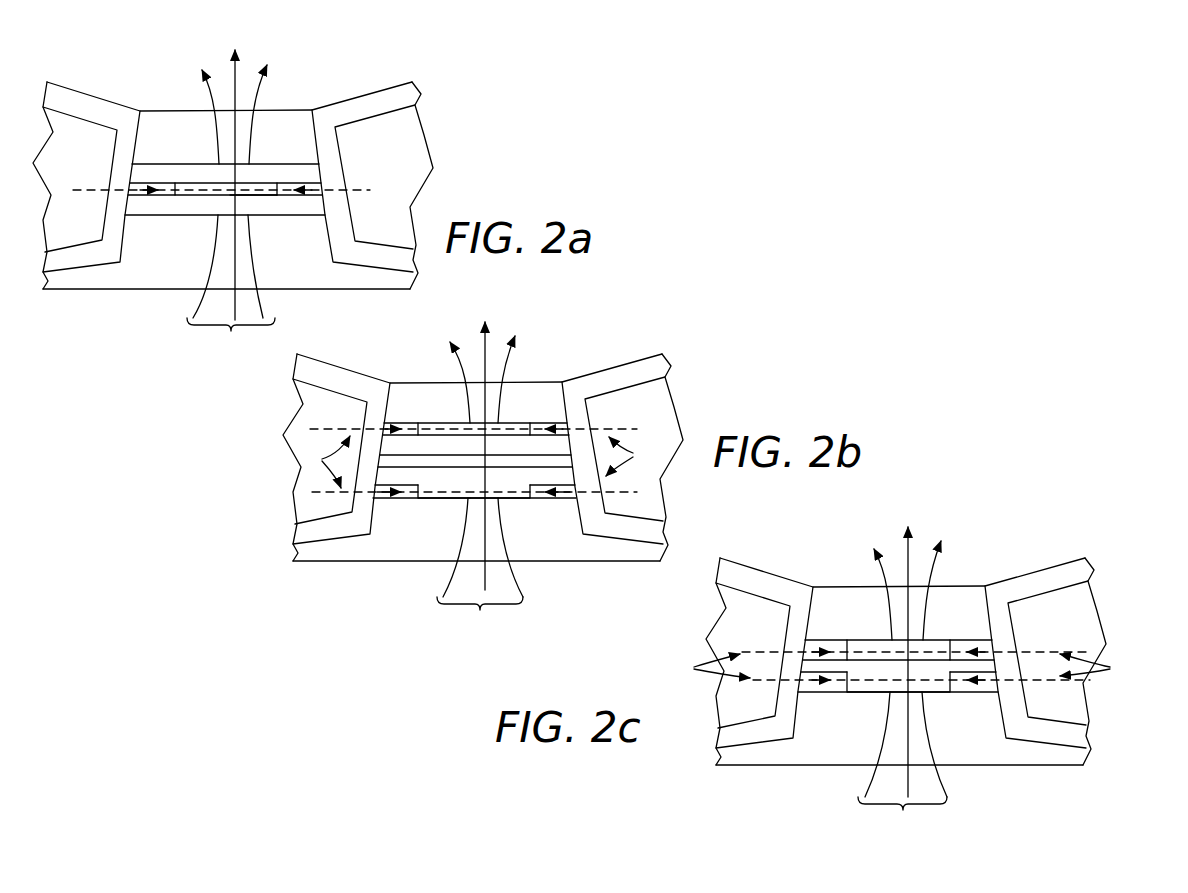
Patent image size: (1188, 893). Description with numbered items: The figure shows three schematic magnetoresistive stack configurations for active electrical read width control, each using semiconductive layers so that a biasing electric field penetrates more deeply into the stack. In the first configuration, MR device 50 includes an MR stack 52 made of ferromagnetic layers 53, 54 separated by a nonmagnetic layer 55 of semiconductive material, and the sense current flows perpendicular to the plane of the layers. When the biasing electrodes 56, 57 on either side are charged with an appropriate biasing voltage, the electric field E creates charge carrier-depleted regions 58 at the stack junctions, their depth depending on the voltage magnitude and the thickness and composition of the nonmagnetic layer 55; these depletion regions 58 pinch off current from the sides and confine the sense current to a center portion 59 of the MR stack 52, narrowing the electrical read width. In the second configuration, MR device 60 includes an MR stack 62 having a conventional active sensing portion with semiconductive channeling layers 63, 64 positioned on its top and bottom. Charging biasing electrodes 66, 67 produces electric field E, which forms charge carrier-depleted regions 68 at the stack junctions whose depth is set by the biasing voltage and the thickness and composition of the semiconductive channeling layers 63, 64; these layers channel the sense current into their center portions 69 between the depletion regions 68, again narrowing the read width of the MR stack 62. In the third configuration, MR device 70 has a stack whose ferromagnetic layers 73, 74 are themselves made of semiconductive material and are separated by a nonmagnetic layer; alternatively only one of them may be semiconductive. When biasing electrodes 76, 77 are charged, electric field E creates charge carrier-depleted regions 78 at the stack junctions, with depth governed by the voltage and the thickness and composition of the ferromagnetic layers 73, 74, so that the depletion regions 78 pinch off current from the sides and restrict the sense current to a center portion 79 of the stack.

In FIG. 2a, the MR device 50 is at (456, 106).
In FIG. 2a, the MR stack 52 is at (173, 160).
In FIG. 2a, the ferromagnetic layer 53 is at (273, 165).
In FIG. 2a, the ferromagnetic layer 54 is at (318, 207).
In FIG. 2a, the nonmagnetic layer 55 is at (203, 192).
In FIG. 2a, the biasing electrode 56 is at (66, 152).
In FIG. 2a, the biasing electrode 57 is at (365, 152).
In FIG. 2a, the charge carrier-depleted regions 58 is at (162, 200).
In FIG. 2a, the center portion 59 is at (272, 200).
In FIG. 2b, the MR device 60 is at (705, 388).
In FIG. 2b, the MR stack 62 is at (410, 512).
In FIG. 2b, the semiconductive channeling layer 63 is at (517, 422).
In FIG. 2b, the semiconductive channeling layer 64 is at (537, 503).
In FIG. 2b, the biasing electrode 66 is at (313, 417).
In FIG. 2b, the biasing electrode 67 is at (616, 412).
In FIG. 2b, the charge carrier-depleted regions 68 is at (400, 480).
In FIG. 2b, the center portions 69 is at (432, 417).
In FIG. 2c, the MR device 70 is at (1036, 560).
In FIG. 2c, the ferromagnetic layer 73 is at (828, 640).
In FIG. 2c, the ferromagnetic layer 74 is at (968, 695).
In FIG. 2c, the biasing electrode 76 is at (736, 625).
In FIG. 2c, the biasing electrode 77 is at (1050, 620).
In FIG. 2c, the charge carrier-depleted regions 78 is at (972, 632).
In FIG. 2c, the center portion 79 is at (944, 632).